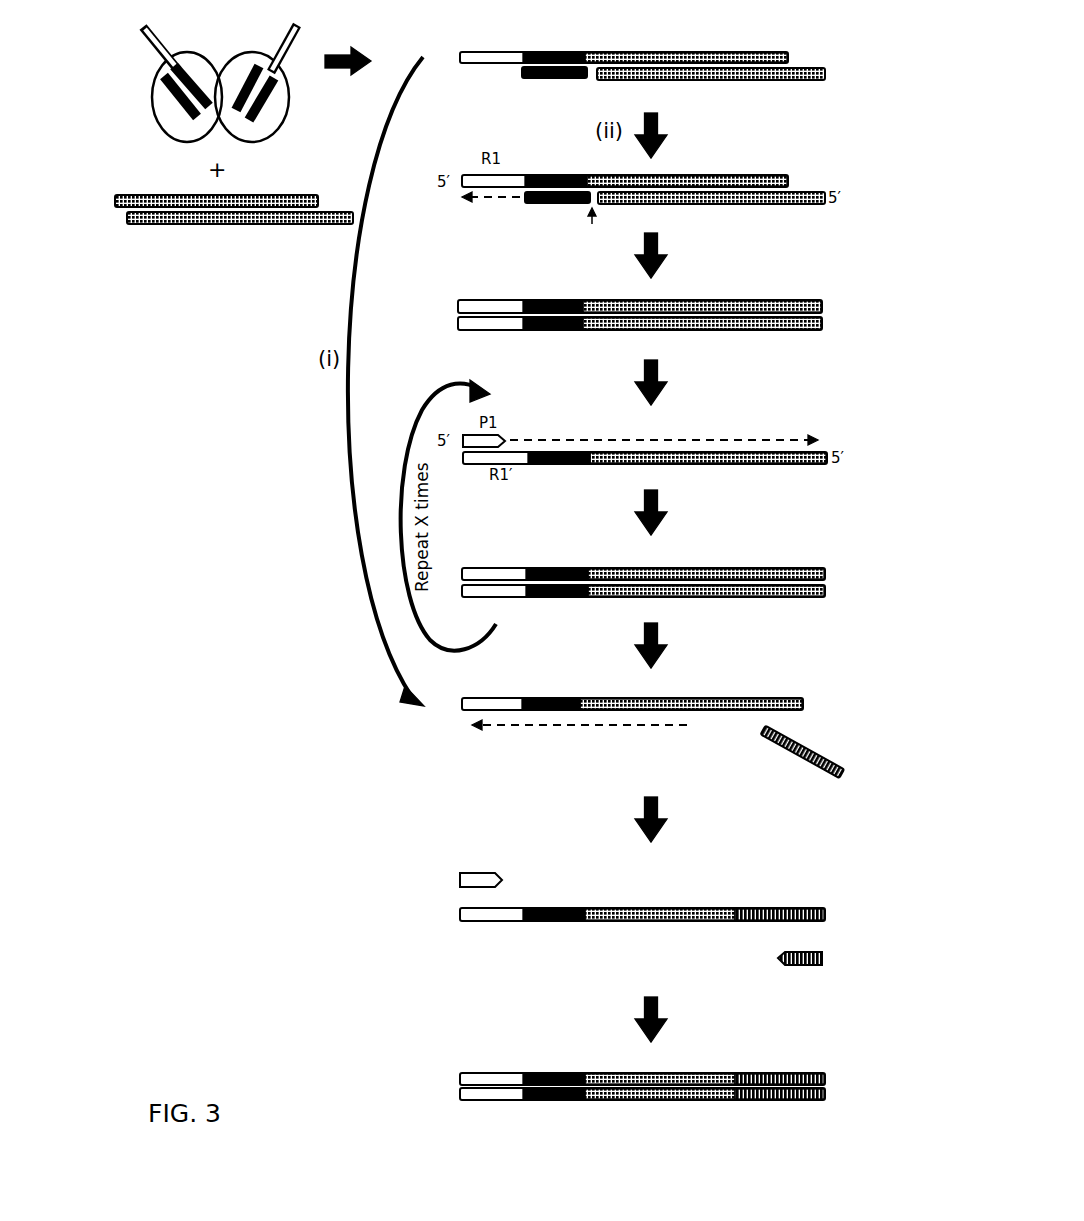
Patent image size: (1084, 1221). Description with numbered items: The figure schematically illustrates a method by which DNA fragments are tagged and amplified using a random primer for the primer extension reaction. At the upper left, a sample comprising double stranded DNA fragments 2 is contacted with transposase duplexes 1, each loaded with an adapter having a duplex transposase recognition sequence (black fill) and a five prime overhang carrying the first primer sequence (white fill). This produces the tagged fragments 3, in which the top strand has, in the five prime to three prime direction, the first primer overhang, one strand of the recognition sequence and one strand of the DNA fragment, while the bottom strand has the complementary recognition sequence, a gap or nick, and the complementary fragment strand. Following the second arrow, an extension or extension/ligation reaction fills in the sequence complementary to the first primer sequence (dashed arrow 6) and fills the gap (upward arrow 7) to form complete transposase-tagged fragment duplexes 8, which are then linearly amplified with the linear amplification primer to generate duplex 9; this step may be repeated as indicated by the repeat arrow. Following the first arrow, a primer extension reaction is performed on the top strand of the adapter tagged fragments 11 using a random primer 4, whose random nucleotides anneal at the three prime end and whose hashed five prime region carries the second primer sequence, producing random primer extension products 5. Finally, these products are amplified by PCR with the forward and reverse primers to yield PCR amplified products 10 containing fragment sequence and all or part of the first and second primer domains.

The transposase duplexes 1 is at (113, 33).
The double stranded DNA fragments 2 is at (113, 175).
The tagged fragments 3 is at (850, 37).
The random primer 4 is at (740, 757).
The random primer extension products 5 is at (855, 906).
The dashed arrow 6 is at (491, 209).
The upward arrow 7 is at (592, 228).
The complete transposase-tagged fragment duplexes 8 is at (853, 290).
The duplex 9 is at (855, 557).
The PCR amplified products 10 is at (853, 1065).
The adapter tagged fragments 11 is at (822, 696).